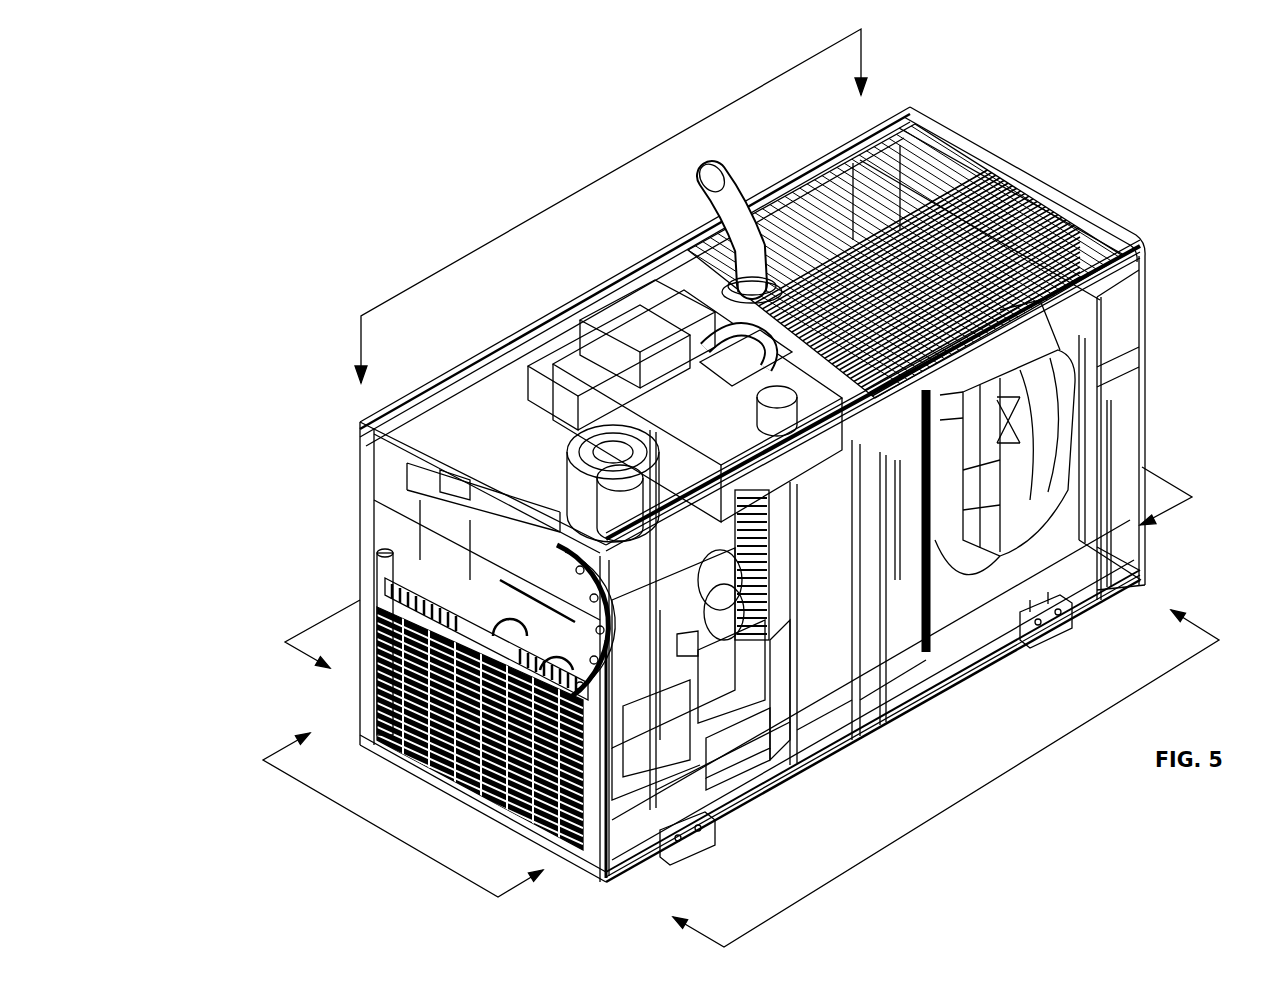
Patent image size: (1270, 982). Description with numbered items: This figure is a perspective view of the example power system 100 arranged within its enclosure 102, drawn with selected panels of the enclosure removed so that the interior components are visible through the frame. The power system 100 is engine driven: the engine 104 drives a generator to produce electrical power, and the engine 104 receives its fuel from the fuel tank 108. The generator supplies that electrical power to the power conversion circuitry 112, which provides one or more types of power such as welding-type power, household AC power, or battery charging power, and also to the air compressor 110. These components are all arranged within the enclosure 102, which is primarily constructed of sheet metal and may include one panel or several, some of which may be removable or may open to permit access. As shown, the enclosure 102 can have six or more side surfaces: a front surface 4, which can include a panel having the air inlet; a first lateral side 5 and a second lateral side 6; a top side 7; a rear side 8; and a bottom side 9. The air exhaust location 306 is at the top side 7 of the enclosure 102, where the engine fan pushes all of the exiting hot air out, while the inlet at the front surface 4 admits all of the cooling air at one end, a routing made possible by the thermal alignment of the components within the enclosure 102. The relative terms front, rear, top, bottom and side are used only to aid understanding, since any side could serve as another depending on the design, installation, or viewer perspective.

The power system 100 is at (335, 178).
The enclosure 102 is at (1047, 170).
The engine 104 is at (946, 559).
The fuel tank 108 is at (828, 650).
The air compressor 110 is at (572, 438).
The power conversion circuitry 112 is at (726, 752).
The air exhaust location 306 is at (701, 224).
The front surface 4 is at (375, 826).
The first lateral side 5 is at (1013, 768).
The second lateral side 6 is at (360, 600).
The top side 7 is at (545, 210).
The rear side 8 is at (1158, 475).
The bottom side 9 is at (1003, 662).